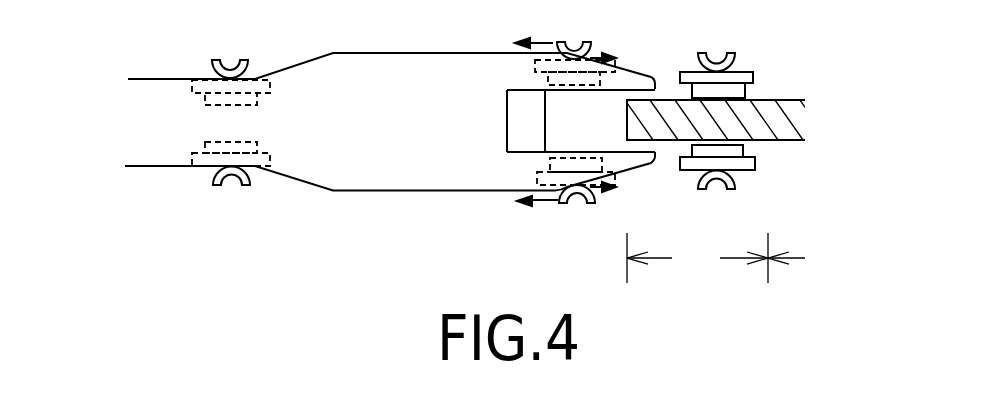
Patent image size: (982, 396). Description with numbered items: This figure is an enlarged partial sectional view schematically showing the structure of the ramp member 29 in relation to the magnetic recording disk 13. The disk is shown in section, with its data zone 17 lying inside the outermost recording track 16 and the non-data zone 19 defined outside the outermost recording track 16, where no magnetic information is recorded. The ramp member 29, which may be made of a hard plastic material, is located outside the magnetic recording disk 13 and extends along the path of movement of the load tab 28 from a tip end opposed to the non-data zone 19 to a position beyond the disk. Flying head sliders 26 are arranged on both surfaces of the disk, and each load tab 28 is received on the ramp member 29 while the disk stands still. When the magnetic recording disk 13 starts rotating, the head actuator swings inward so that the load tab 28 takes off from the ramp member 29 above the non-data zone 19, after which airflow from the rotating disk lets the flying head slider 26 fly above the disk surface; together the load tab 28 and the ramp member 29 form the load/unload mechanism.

The magnetic recording disk 13 is at (627, 130).
The outermost recording track 16 is at (768, 140).
The data zone 17 is at (805, 260).
The non-data zone 19 is at (697, 258).
The flying head slider 26 is at (692, 88).
The load tab 28 is at (226, 66).
The ramp member 29 is at (300, 242).